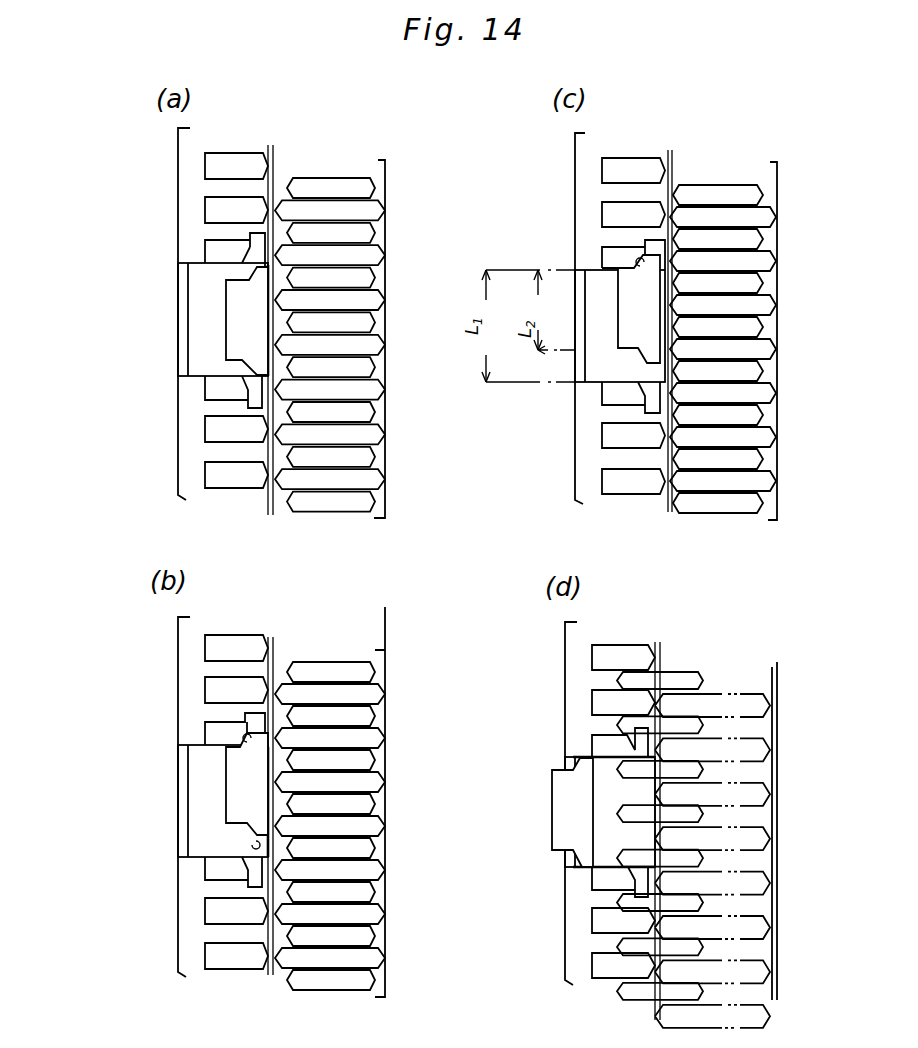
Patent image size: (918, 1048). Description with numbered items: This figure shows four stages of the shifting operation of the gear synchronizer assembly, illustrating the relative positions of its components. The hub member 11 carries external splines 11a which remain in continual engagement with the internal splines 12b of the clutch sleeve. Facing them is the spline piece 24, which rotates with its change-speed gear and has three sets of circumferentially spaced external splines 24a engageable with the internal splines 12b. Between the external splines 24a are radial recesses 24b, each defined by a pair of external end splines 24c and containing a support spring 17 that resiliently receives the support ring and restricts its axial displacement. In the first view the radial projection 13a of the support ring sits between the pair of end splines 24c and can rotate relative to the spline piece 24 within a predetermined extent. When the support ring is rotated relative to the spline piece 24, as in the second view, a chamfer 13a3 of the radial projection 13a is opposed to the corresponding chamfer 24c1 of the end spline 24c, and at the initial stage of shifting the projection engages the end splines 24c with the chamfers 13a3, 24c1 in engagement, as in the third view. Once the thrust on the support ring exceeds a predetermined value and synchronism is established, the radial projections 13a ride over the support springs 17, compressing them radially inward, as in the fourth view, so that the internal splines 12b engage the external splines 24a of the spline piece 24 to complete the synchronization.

The hub member 11 is at (395, 427).
The external splines 11a is at (370, 303).
The internal splines 12b is at (332, 190).
The radial projections 13a is at (258, 329).
The chamfer 13a3 is at (296, 869).
The support springs 17 is at (200, 312).
The spline piece 24 is at (167, 182).
The external splines 24a is at (238, 162).
The radial recesses 24b is at (178, 362).
The external end splines 24c is at (217, 252).
The chamfer 24c1 is at (640, 262).